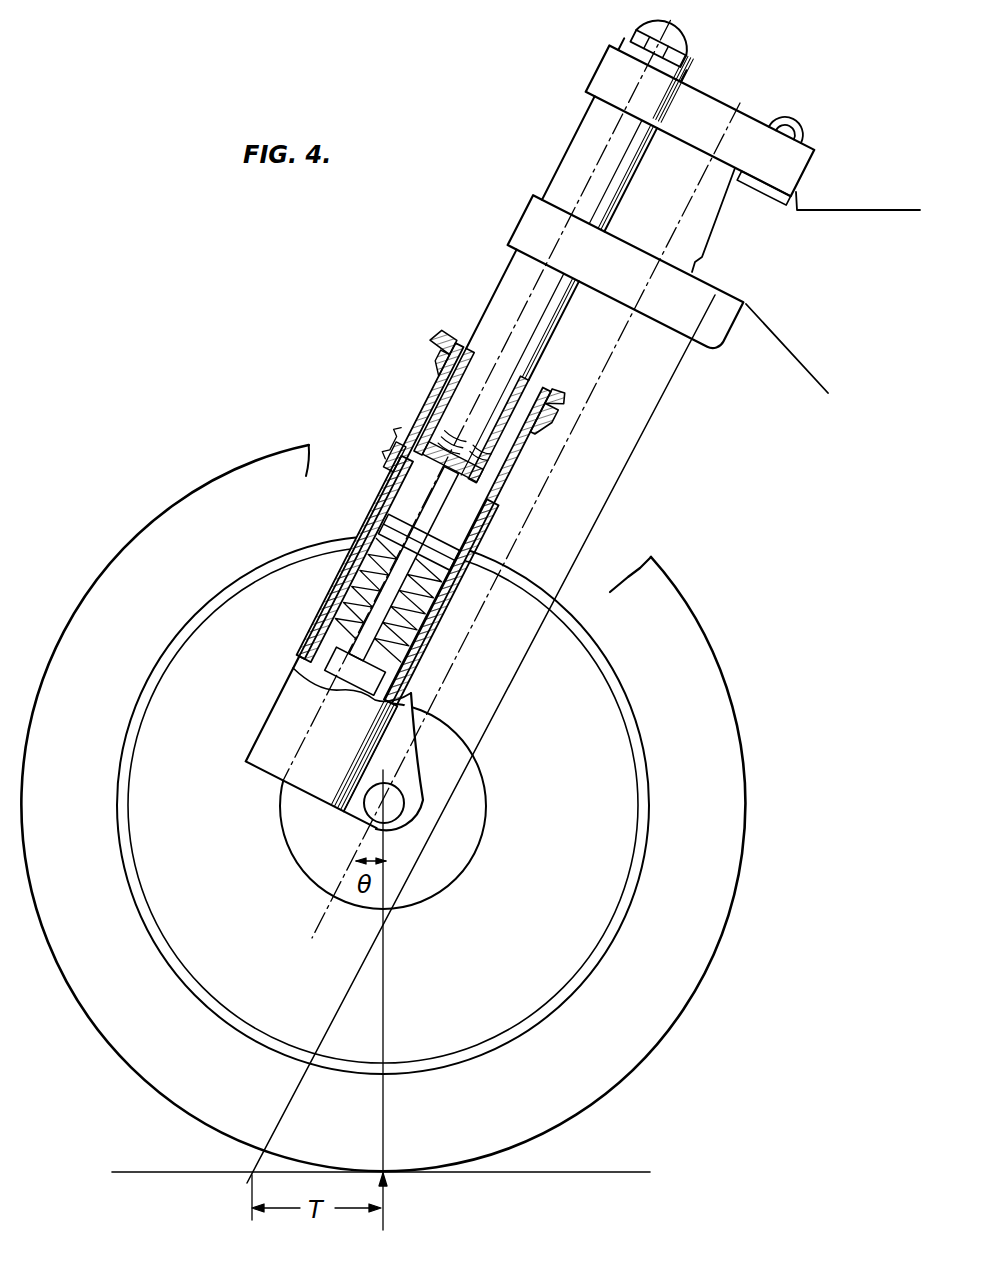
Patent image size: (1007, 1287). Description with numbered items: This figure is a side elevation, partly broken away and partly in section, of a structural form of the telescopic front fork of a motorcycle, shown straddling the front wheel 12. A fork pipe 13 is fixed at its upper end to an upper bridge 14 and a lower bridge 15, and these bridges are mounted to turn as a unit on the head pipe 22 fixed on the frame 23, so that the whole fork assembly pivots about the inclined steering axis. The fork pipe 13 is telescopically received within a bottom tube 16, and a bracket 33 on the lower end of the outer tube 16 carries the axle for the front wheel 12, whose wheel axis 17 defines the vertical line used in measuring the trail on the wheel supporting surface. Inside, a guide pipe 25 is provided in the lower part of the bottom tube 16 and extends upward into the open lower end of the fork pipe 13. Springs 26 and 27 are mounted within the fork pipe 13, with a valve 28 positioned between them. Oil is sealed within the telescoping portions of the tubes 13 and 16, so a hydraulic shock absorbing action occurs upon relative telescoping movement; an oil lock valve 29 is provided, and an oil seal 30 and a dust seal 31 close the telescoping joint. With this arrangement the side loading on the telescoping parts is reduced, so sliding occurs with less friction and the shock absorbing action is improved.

The front wheel 12 is at (150, 557).
The fork pipe 13 is at (500, 318).
The upper bridge 14 is at (705, 108).
The lower bridge 15 is at (633, 263).
The bottom tube 16 is at (448, 607).
The wheel axis 17 is at (400, 805).
The head pipe 22 is at (800, 225).
The frame 23 is at (850, 207).
The guide pipe 25 is at (372, 543).
The spring 26 is at (413, 420).
The spring 27 is at (371, 573).
The valve 28 is at (388, 470).
The oil lock valve 29 is at (440, 645).
The oil seal 30 is at (540, 427).
The dust seal 31 is at (540, 380).
The bracket 33 is at (418, 781).